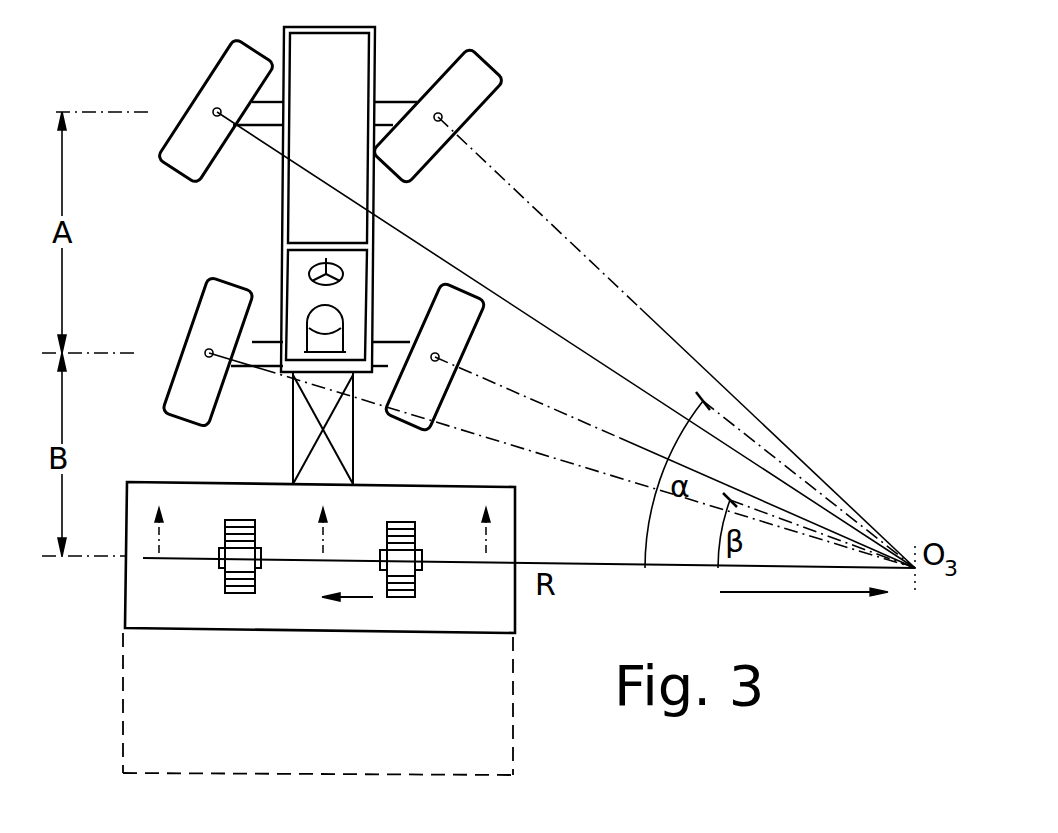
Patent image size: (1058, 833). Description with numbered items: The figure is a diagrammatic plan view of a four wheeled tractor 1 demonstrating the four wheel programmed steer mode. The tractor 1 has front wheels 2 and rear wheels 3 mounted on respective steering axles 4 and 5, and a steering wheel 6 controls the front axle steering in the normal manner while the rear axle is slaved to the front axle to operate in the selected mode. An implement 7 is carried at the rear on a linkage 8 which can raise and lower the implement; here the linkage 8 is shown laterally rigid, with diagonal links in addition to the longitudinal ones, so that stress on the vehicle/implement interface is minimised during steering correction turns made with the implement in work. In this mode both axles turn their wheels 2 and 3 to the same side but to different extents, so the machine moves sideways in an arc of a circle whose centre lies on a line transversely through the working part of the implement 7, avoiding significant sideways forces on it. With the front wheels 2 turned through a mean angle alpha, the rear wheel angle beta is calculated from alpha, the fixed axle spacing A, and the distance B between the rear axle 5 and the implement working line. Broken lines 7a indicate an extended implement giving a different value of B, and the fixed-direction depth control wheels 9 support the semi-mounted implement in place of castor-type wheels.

The four wheeled tractor 1 is at (300, 217).
The front wheels 2 is at (218, 85).
The rear wheels 3 is at (207, 328).
The front steering axle 4 is at (394, 113).
The rear steering axle 5 is at (393, 353).
The steering wheel 6 is at (337, 263).
The implement 7 is at (138, 596).
The extended implement 7a is at (142, 745).
The linkage 8 is at (354, 457).
The depth control wheels 9 is at (227, 590).